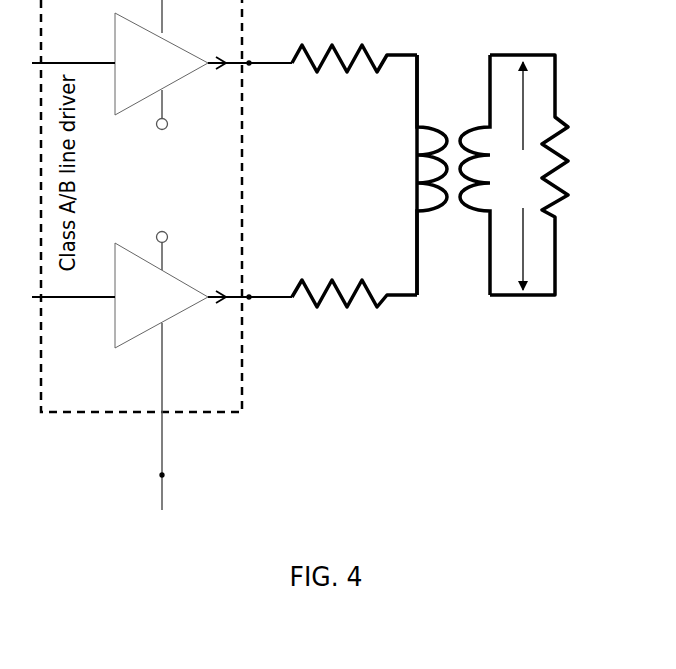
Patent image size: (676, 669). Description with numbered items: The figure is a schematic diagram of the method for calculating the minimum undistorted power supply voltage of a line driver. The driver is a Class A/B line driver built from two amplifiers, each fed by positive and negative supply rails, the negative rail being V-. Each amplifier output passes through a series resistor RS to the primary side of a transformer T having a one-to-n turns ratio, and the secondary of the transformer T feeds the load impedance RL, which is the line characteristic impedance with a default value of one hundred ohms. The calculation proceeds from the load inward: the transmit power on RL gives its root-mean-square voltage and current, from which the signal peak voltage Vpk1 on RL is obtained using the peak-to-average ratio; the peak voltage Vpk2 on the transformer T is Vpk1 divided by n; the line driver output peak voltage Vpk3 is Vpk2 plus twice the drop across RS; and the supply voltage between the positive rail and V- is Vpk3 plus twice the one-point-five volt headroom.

The series resistor RS is at (354, 180).
The load impedance RL is at (543, 175).
The transformer T is at (477, 159).
The signal peak voltage on the load impedance Vpk1 is at (513, 176).
The secondary signal peak voltage on the transformer Vpk2 is at (412, 292).
The peak voltage of the output signal of the line driver Vpk3 is at (237, 68).
The negative power supply voltage V- is at (172, 322).